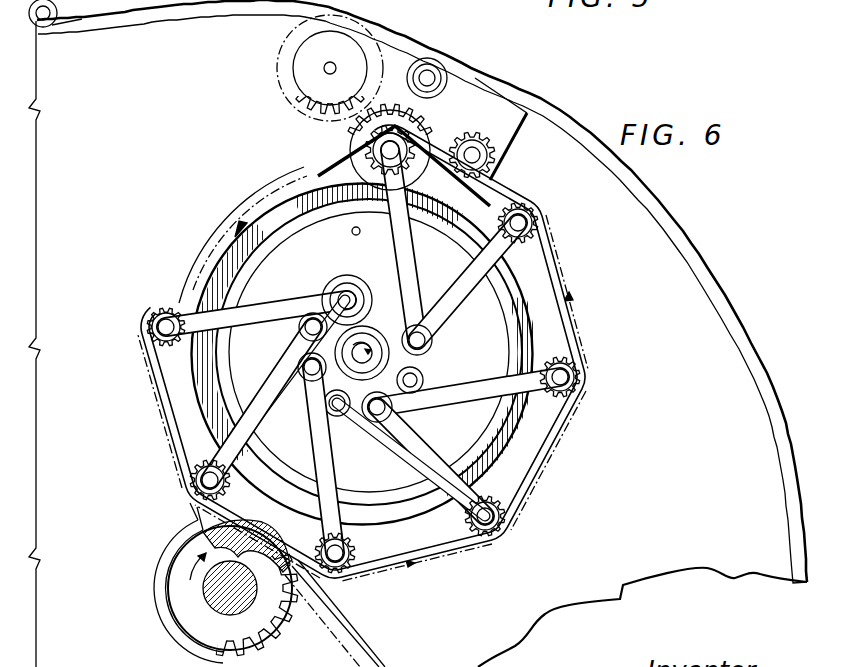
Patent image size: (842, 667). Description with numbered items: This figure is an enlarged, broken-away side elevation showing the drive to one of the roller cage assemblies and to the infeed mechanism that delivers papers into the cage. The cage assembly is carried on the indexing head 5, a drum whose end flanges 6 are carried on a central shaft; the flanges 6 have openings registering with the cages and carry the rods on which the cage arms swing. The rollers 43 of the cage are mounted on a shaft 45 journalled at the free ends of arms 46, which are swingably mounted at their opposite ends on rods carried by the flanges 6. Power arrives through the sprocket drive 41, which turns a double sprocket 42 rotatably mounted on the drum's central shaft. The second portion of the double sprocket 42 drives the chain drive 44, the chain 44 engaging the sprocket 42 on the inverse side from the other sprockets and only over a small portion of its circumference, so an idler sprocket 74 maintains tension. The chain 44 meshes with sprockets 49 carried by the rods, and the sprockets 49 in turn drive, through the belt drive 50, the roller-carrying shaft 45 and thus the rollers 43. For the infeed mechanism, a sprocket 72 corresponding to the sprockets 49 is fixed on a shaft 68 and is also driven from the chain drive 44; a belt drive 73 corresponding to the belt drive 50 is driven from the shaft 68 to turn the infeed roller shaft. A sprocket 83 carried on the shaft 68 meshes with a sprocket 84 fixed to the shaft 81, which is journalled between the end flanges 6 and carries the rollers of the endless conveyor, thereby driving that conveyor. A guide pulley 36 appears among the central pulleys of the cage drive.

The indexing head 5 is at (677, 207).
The end flanges 6 is at (664, 258).
The guide pulley 36 is at (318, 352).
The sprocket drive 41 is at (340, 612).
The double sprocket 42 is at (213, 523).
The rollers 43 is at (310, 345).
The chain drive 44 is at (465, 553).
The shaft 45 is at (305, 368).
The arms 46 is at (252, 402).
The sprockets 49 is at (560, 360).
The belt drive 50 is at (457, 300).
The shaft 68 is at (380, 152).
The sprocket 72 is at (353, 143).
The belt drive 73 is at (327, 185).
The idler sprocket 74 is at (497, 157).
The shaft 81 is at (328, 68).
The sprocket 83 is at (385, 97).
The sprocket 84 is at (296, 78).